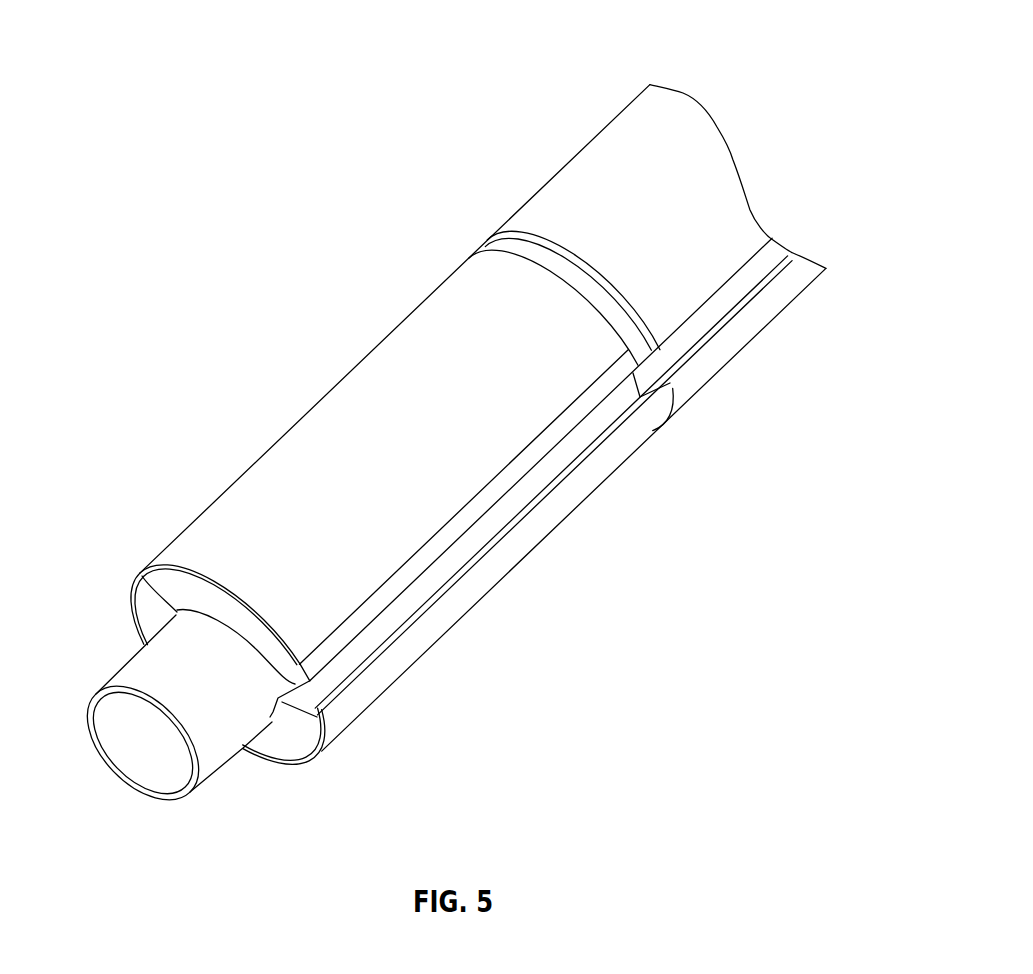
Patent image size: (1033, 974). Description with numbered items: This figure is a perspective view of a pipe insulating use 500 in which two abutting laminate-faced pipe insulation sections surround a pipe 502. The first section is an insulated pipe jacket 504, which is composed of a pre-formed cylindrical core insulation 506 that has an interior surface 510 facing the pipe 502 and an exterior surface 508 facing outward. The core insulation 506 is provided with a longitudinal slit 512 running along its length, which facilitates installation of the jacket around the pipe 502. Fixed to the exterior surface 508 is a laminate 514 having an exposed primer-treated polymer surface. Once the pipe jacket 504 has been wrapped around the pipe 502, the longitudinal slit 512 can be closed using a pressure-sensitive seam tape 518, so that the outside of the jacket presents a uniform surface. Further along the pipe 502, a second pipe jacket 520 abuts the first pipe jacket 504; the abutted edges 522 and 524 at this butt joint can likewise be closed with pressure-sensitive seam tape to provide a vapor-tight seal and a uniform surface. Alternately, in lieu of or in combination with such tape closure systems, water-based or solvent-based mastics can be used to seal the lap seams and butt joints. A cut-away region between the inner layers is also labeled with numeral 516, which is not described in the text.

The pipe insulating use 500 is at (703, 26).
The pipe 502 is at (117, 690).
The insulated pipe jacket 504 is at (282, 440).
The pre-formed cylindrical core insulation 506 is at (142, 613).
The exterior surface 508 is at (156, 563).
The interior surface 510 is at (136, 590).
The longitudinal slit 512 is at (453, 565).
The laminate 514 is at (518, 548).
The third layer 516 is at (467, 470).
The pressure-sensitive seam tape 518 is at (370, 612).
The second pipe jacket 520 is at (612, 120).
The abutted edge 522 is at (540, 268).
The abutted edge 524 is at (553, 243).